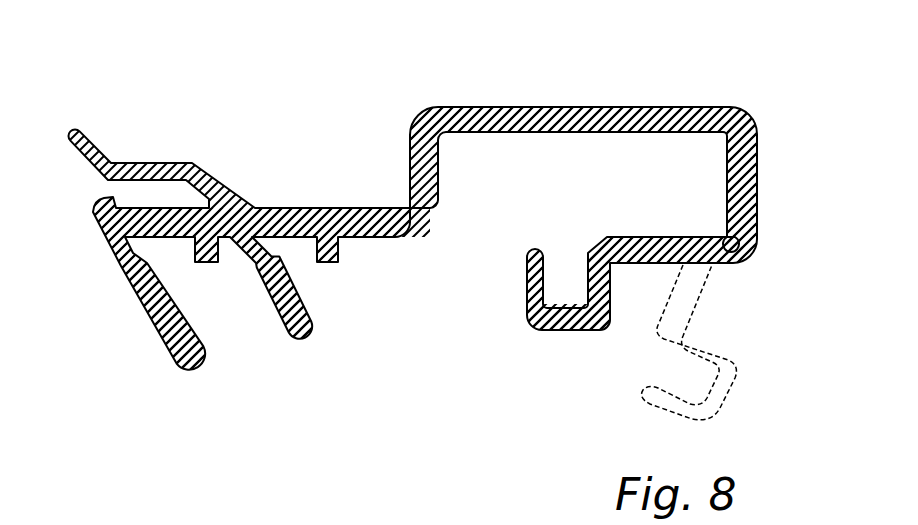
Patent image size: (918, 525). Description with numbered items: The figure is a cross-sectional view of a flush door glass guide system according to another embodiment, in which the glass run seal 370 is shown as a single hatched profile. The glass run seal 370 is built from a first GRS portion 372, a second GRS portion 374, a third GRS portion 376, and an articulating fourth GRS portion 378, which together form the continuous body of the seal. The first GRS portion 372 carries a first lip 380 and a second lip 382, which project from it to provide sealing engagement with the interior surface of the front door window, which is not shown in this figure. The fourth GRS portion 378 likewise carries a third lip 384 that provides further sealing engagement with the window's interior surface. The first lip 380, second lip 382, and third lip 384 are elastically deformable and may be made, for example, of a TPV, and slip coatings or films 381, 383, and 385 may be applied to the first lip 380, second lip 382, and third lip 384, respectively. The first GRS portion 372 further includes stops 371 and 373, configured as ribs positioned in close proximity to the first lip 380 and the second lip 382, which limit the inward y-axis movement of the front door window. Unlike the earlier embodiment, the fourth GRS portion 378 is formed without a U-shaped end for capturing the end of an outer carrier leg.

The glass run seal 370 is at (342, 67).
The stop 371 is at (150, 327).
The first GRS portion 372 is at (295, 210).
The stop 373 is at (323, 263).
The second GRS portion 374 is at (587, 107).
The third GRS portion 376 is at (753, 173).
The fourth GRS portion 378 is at (670, 247).
The first lip 380 is at (205, 262).
The slip coating or film 381 is at (167, 357).
The second lip 382 is at (310, 305).
The slip coating or film 383 is at (290, 333).
The third lip 384 is at (552, 302).
The slip coating or film 385 is at (533, 320).